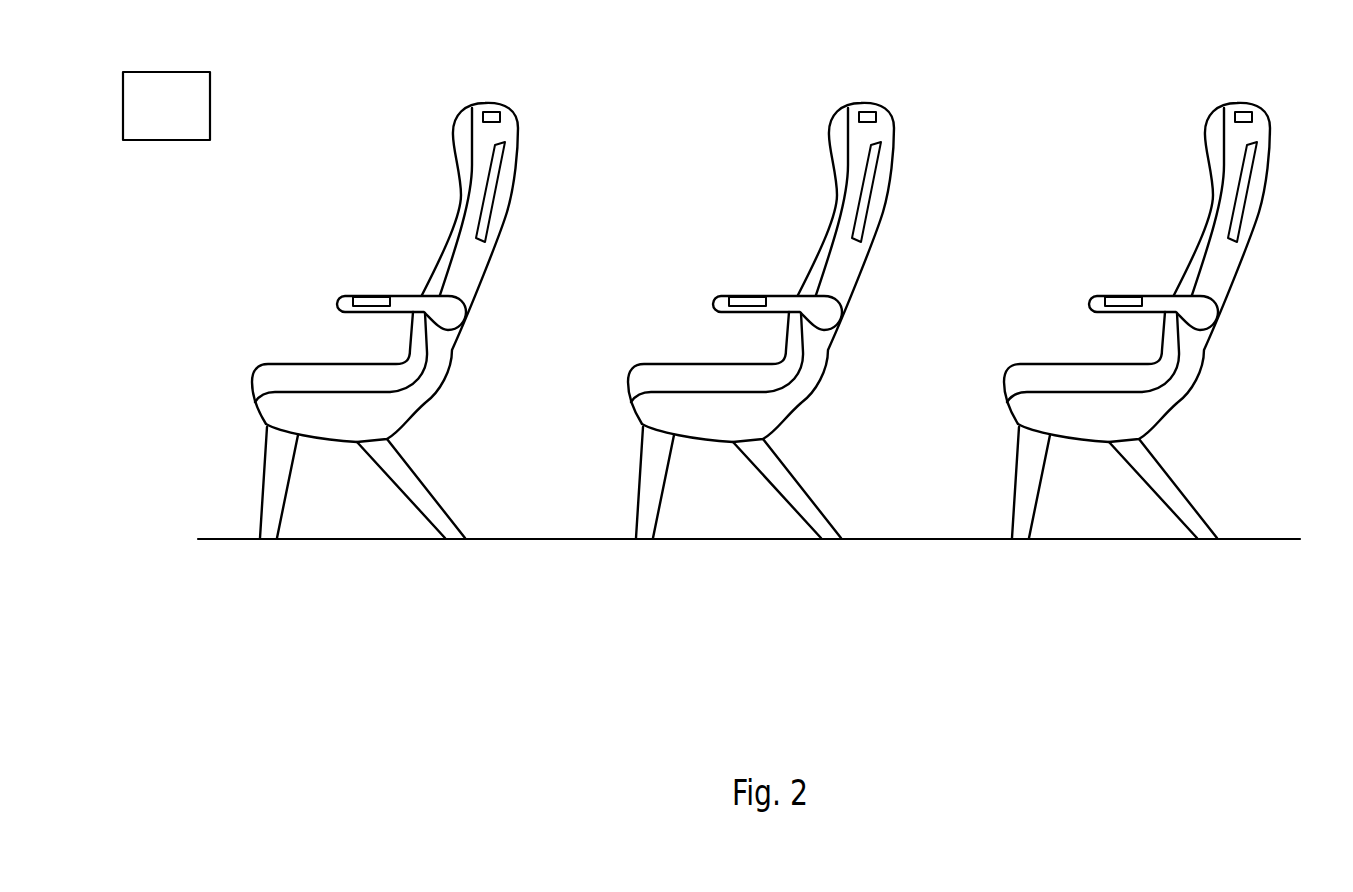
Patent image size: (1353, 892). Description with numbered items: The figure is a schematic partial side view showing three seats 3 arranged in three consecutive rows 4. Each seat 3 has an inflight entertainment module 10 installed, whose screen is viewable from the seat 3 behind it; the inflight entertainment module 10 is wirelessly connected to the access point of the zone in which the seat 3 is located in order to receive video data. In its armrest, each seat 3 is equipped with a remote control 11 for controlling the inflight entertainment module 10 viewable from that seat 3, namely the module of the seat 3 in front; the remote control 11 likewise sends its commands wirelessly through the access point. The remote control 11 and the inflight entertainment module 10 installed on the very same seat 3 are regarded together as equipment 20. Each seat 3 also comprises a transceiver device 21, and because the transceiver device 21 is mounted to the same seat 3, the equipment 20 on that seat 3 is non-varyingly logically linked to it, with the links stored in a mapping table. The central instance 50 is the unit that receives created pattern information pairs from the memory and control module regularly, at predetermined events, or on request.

The seat 3 is at (288, 372).
The row 4 is at (352, 567).
The inflight entertainment module 10 is at (492, 192).
The remote control 11 is at (372, 296).
The equipment 20 is at (847, 216).
The transceiver device 21 is at (487, 111).
The central instance 50 is at (152, 117).